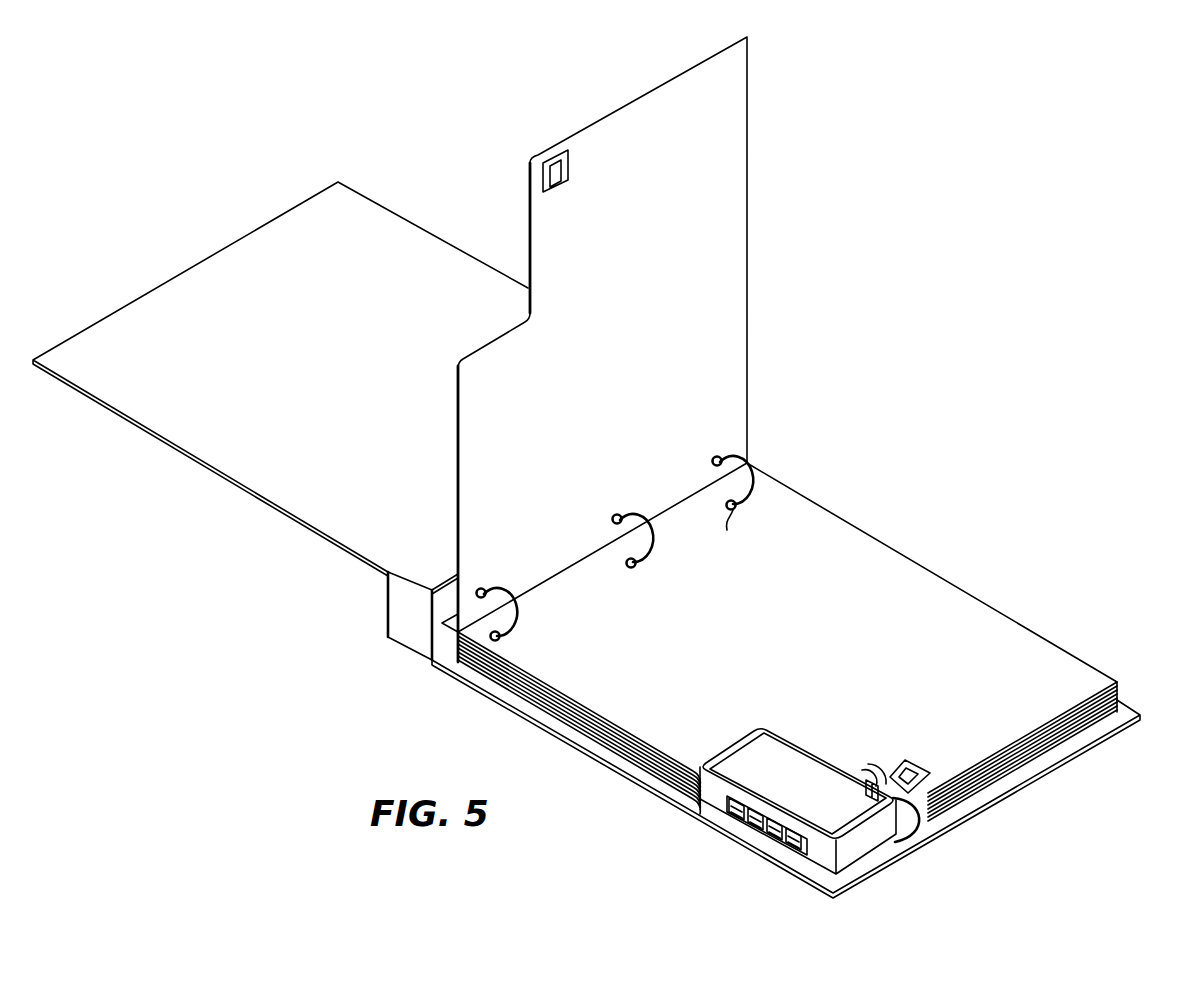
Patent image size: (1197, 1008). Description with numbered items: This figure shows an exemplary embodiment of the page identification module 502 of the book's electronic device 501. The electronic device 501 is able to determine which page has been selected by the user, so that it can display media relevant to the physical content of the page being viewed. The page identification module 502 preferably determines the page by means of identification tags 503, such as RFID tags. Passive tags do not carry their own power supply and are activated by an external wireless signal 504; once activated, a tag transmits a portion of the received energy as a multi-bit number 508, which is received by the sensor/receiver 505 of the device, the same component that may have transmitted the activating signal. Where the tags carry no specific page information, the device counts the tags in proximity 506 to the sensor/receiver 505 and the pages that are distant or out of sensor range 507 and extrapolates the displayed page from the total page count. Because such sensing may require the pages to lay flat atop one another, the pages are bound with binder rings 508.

The electronic device 501 is at (757, 852).
The page identification module 502 is at (833, 805).
The identification tag 503 is at (551, 152).
The wireless signal 504 is at (862, 760).
The sensor/receiver 505 is at (853, 790).
The tags in proximity 506 is at (1080, 652).
The pages out of sensor range 507 is at (748, 137).
The binder rings 508 is at (654, 531).